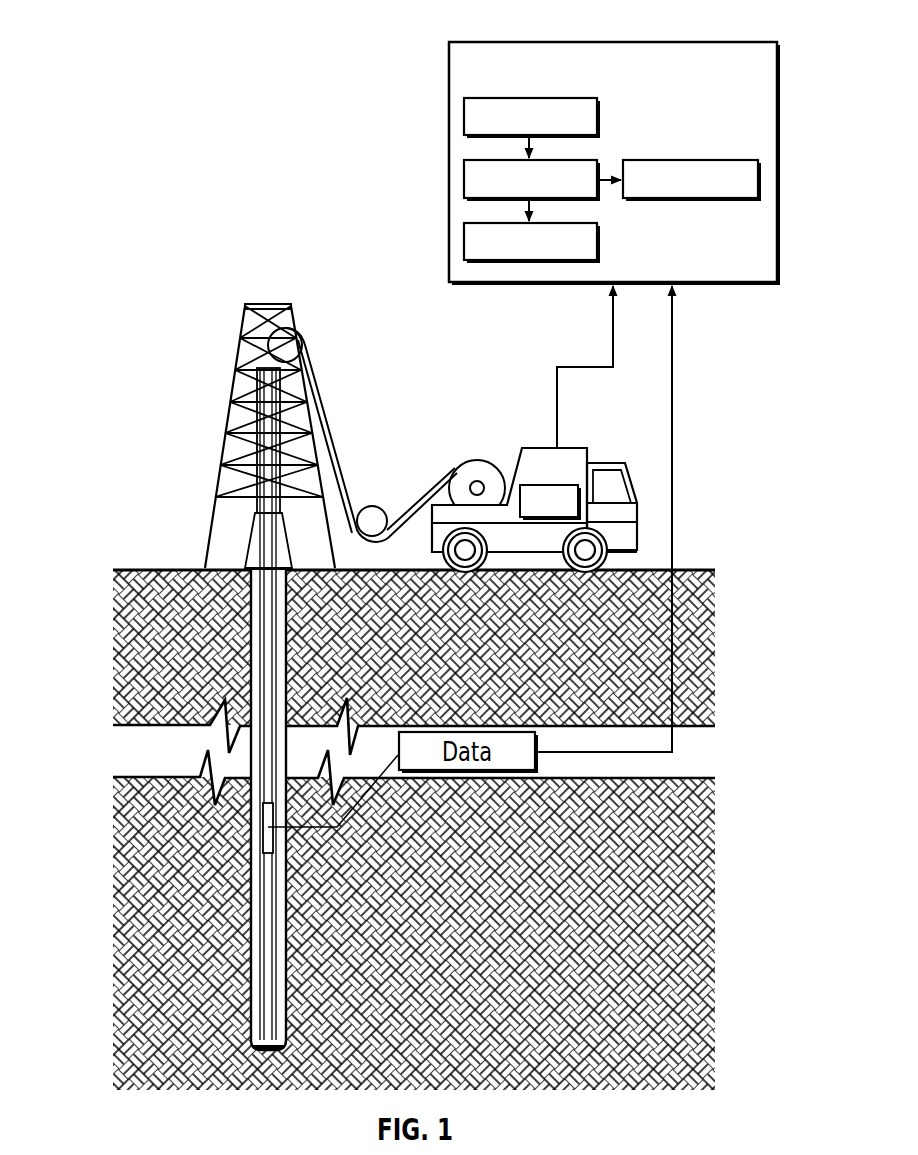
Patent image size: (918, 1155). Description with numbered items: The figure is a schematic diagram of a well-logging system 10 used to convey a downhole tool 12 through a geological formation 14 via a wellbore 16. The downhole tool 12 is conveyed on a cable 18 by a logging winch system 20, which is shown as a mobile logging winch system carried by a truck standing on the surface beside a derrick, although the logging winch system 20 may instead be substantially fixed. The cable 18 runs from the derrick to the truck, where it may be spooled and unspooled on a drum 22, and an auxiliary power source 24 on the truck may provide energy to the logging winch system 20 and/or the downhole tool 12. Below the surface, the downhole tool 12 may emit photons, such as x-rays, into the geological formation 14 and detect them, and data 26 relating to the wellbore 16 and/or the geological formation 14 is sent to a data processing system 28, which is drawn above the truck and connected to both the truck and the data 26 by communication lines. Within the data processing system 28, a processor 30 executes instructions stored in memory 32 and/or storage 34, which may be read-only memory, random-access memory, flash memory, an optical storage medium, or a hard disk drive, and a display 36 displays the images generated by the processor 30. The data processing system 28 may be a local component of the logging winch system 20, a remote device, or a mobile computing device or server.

The well-logging system 10 is at (188, 332).
The downhole tool 12 is at (268, 833).
The geological formation 14 is at (125, 850).
The wellbore 16 is at (243, 620).
The cable 18 is at (338, 421).
The logging winch system 20 is at (531, 469).
The drum 22 is at (477, 460).
The auxiliary power source 24 is at (550, 486).
The data 26 is at (612, 320).
The data processing system 28 is at (588, 146).
The processor 30 is at (463, 178).
The memory 32 is at (463, 115).
The storage 34 is at (463, 242).
The display 36 is at (690, 160).